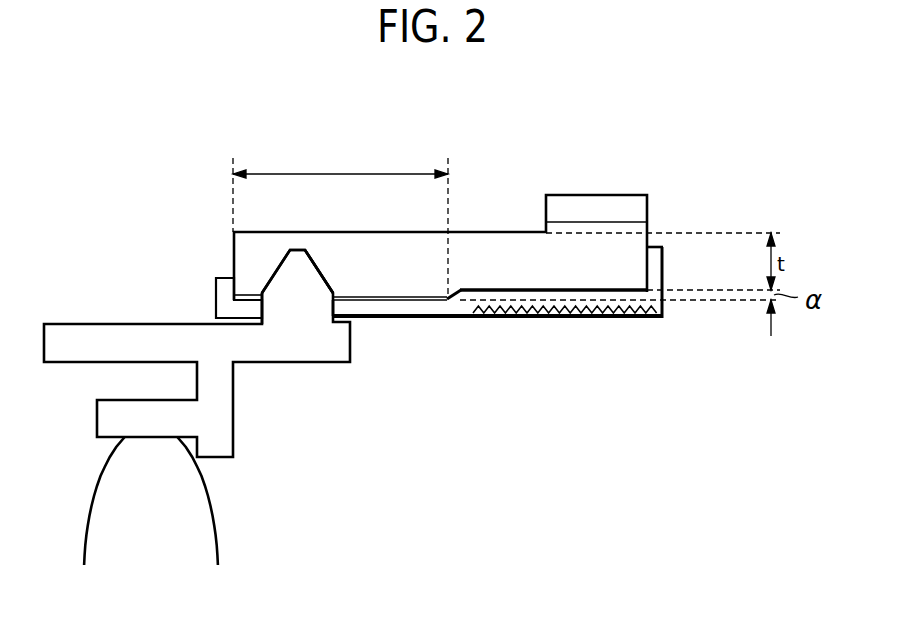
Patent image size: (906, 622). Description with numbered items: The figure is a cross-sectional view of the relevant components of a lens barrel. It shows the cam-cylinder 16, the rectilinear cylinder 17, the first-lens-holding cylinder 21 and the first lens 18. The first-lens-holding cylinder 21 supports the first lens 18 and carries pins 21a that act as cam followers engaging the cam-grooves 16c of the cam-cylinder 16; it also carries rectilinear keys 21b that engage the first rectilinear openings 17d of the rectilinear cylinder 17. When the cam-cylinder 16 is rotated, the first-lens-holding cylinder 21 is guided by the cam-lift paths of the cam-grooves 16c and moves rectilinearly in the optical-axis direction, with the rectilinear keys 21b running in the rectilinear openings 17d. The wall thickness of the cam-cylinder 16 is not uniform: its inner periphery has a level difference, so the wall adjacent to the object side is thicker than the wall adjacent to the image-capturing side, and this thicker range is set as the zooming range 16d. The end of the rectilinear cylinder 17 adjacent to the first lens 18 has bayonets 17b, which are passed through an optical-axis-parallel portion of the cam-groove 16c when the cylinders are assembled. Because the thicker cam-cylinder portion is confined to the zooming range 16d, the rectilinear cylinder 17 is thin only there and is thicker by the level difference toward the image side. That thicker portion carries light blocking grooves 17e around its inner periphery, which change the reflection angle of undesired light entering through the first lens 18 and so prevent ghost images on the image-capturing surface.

The cam-cylinder 16 is at (400, 282).
The cam-groove 16c is at (320, 275).
The zooming range 16d is at (340, 209).
The rectilinear cylinder 17 is at (437, 308).
The bayonet 17b is at (223, 297).
The first rectilinear opening 17d is at (336, 306).
The light blocking groove 17e is at (563, 318).
The first lens 18 is at (105, 535).
The first-lens-holding cylinder 21 is at (58, 336).
The pin 21a is at (293, 273).
The rectilinear key 21b is at (265, 305).